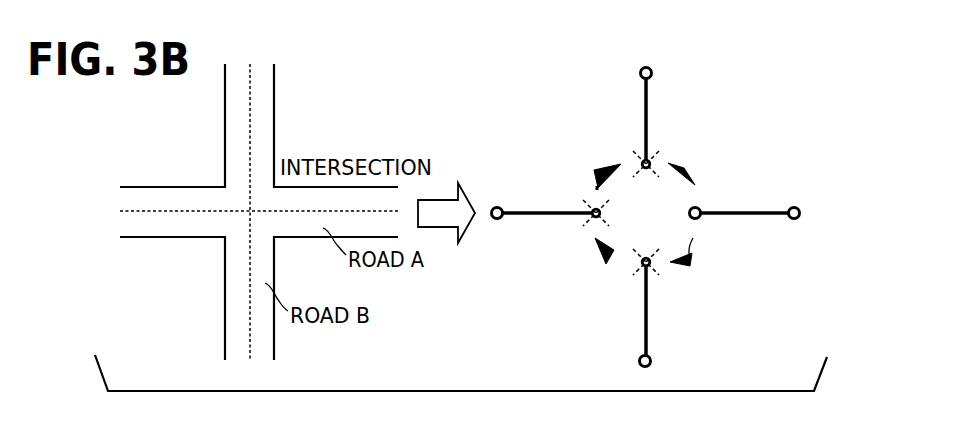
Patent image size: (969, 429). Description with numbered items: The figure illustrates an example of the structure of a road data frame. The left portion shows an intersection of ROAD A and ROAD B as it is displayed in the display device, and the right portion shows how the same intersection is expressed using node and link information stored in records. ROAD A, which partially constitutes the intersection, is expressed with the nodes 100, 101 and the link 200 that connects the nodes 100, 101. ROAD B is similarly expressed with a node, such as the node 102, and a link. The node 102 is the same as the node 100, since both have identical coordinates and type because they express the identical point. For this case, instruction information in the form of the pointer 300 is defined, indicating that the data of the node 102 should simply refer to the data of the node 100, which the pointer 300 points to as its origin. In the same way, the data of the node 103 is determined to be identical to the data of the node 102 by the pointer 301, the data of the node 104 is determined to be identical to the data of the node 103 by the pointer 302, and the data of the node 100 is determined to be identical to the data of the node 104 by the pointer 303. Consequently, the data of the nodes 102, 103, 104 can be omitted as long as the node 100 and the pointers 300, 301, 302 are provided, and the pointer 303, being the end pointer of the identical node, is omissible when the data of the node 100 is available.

The node 100 is at (699, 208).
The node 101 is at (798, 209).
The node 102 is at (650, 267).
The node 103 is at (592, 209).
The node 104 is at (641, 161).
The link 200 is at (748, 211).
The pointer 300 is at (690, 258).
The pointer 301 is at (620, 260).
The pointer 302 is at (597, 167).
The pointer 303 is at (685, 166).